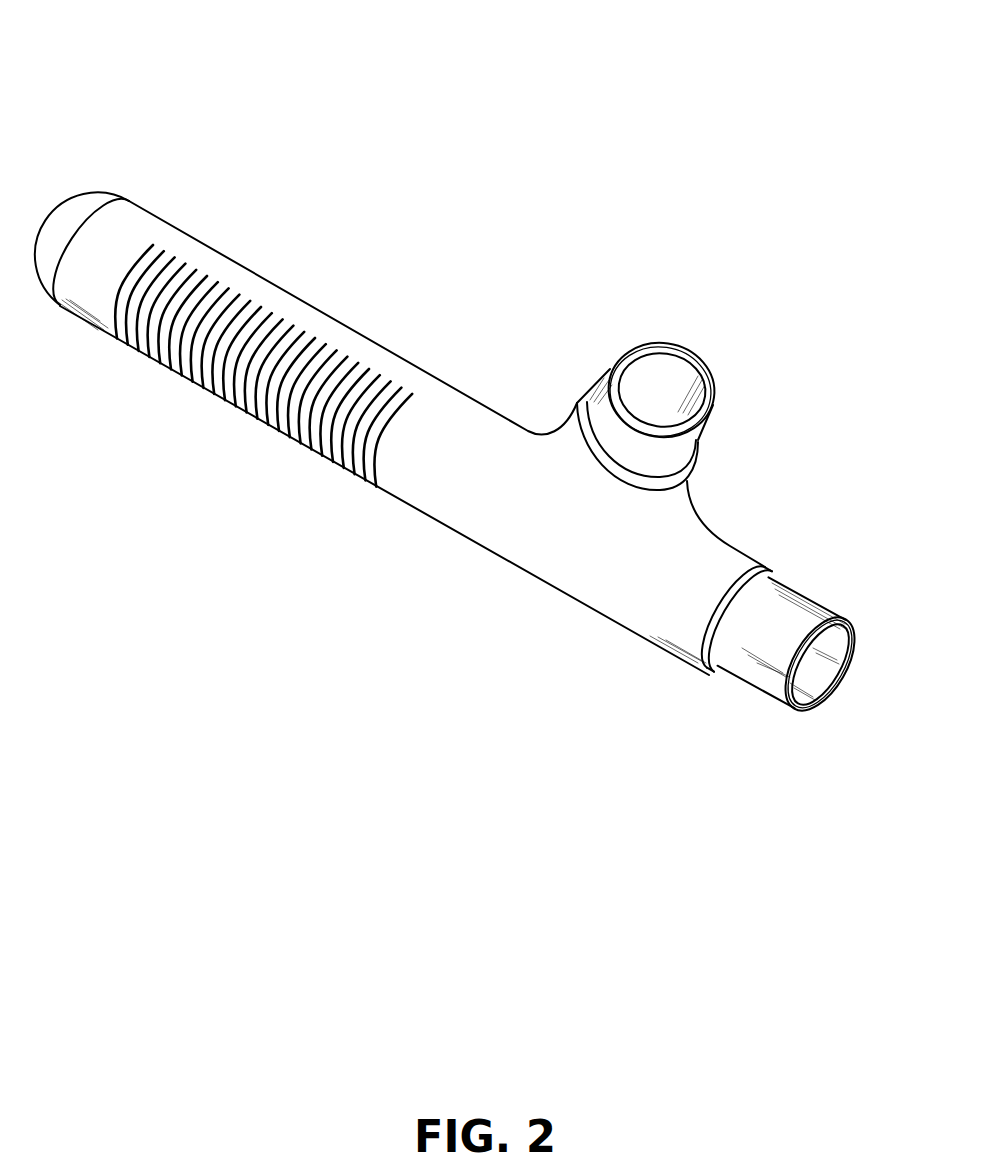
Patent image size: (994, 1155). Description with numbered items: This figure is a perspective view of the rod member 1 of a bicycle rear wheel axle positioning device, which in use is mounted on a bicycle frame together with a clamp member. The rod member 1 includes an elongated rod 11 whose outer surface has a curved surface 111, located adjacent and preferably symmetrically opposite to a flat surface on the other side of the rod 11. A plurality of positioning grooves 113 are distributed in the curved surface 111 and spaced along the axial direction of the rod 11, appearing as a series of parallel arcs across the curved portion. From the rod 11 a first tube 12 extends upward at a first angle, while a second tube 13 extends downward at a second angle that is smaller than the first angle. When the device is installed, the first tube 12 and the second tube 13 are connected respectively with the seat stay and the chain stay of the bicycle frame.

The rod member 1 is at (545, 49).
The rod 11 is at (400, 366).
The curved surface 111 is at (131, 231).
The positioning grooves 113 is at (230, 392).
The first tube 12 is at (680, 450).
The second tube 13 is at (800, 620).